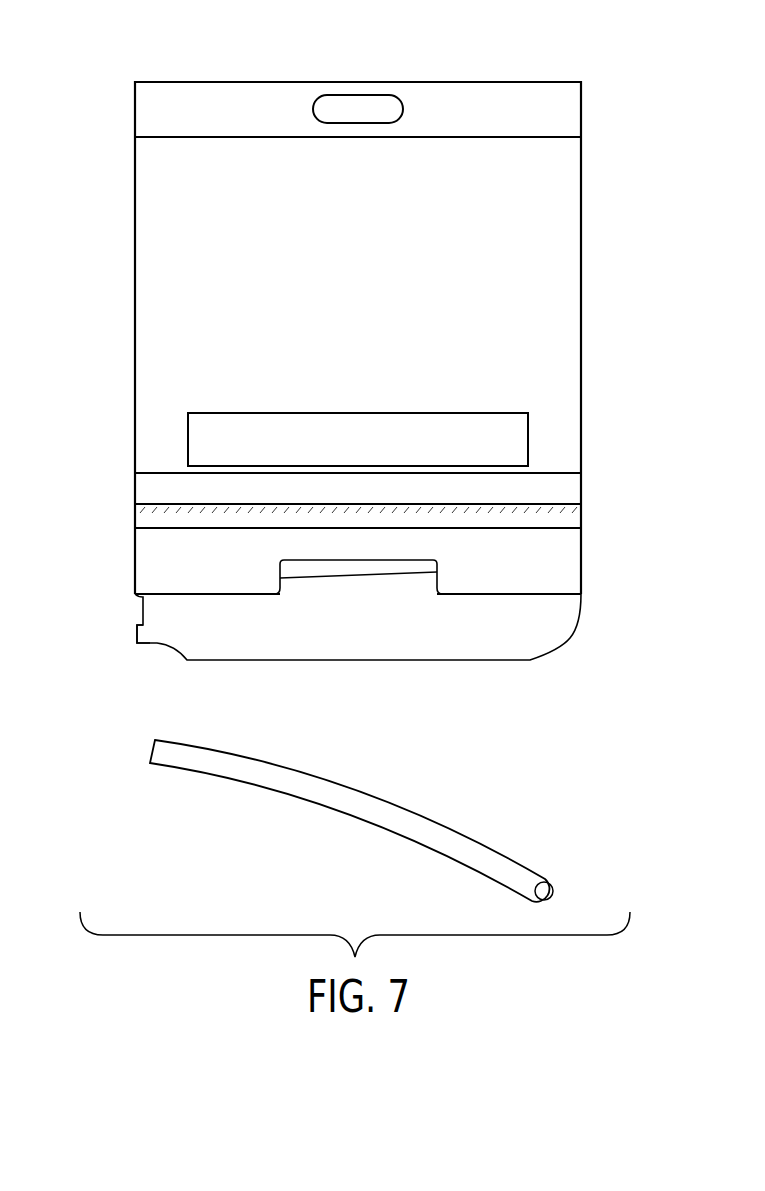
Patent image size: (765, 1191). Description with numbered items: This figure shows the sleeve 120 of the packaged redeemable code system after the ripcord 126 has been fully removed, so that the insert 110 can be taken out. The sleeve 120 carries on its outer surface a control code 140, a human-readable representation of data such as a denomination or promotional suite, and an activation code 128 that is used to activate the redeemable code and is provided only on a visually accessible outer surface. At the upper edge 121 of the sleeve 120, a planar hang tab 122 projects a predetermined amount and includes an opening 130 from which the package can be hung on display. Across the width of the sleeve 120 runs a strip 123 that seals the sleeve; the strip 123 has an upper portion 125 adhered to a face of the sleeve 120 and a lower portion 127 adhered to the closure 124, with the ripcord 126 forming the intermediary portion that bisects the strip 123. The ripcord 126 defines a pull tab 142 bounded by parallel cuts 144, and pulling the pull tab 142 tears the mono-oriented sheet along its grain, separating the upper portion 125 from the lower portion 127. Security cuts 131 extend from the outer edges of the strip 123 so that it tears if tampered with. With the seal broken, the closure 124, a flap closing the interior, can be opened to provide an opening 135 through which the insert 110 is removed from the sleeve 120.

The insert 110 is at (350, 566).
The sleeve 120 is at (577, 206).
The edge 121 is at (135, 137).
The hang tab 122 is at (388, 88).
The strip 123 is at (143, 512).
The closure 124 is at (567, 626).
The upper portion 125 is at (190, 518).
The ripcord 126 is at (415, 822).
The lower portion 127 is at (140, 645).
The activation code 128 is at (355, 412).
The opening 130 is at (350, 106).
The security cuts 131 is at (583, 504).
The opening 135 is at (396, 585).
The control code 140 is at (392, 256).
The pull tab 142 is at (550, 881).
The parallel cuts 144 is at (450, 523).